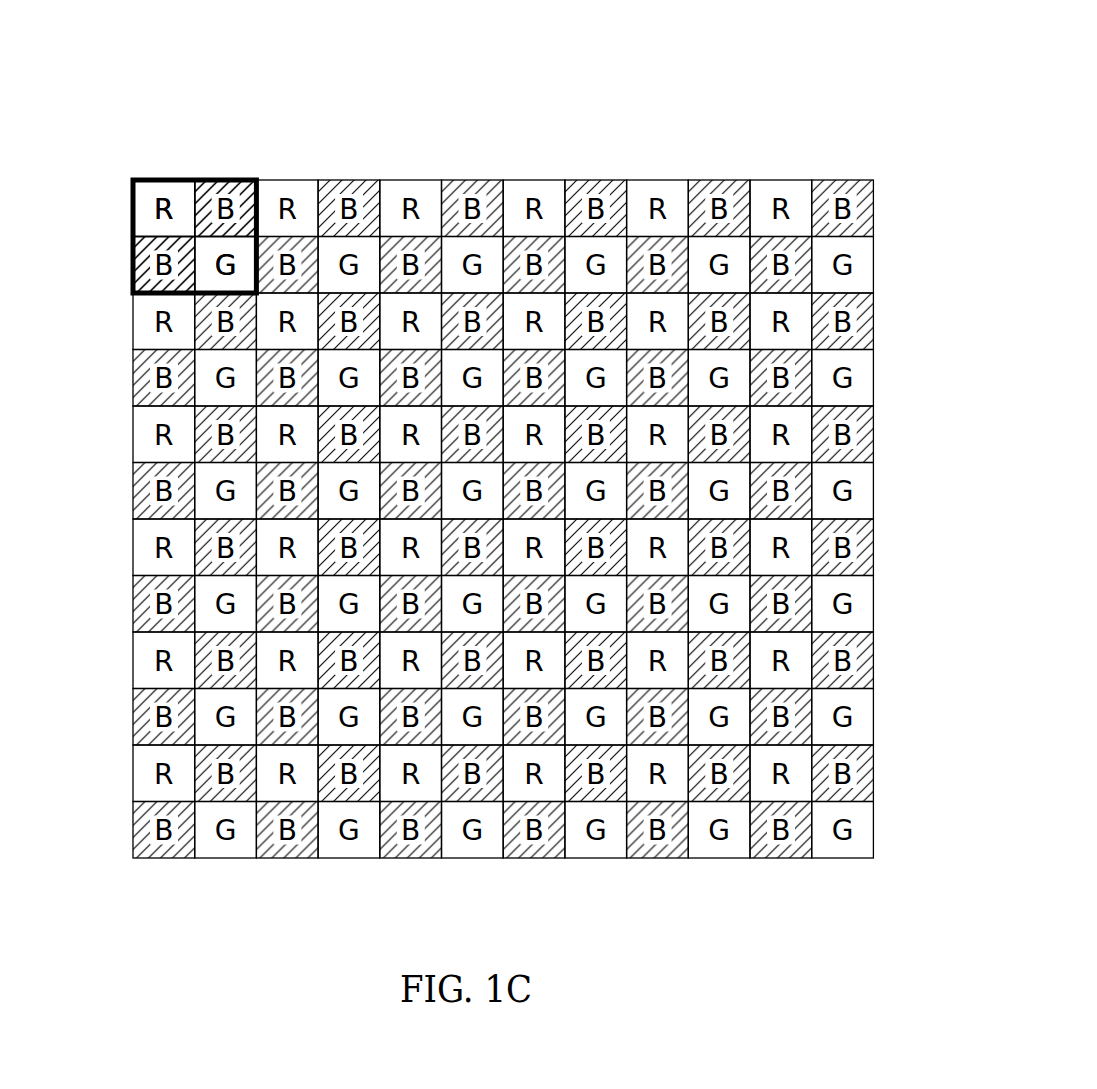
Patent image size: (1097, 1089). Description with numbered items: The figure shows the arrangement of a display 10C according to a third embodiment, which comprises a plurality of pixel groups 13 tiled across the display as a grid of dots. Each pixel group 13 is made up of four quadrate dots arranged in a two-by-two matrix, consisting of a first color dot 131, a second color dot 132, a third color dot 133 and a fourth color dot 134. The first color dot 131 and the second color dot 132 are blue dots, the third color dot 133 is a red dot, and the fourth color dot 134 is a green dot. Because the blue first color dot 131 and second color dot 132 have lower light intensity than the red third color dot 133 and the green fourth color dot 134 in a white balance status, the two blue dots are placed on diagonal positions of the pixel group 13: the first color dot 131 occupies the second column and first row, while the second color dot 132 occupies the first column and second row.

The display 10C is at (505, 429).
The pixel group 13 is at (168, 160).
The first color dot 131 is at (213, 187).
The second color dot 132 is at (132, 240).
The third color dot 133 is at (173, 187).
The fourth color dot 134 is at (216, 286).